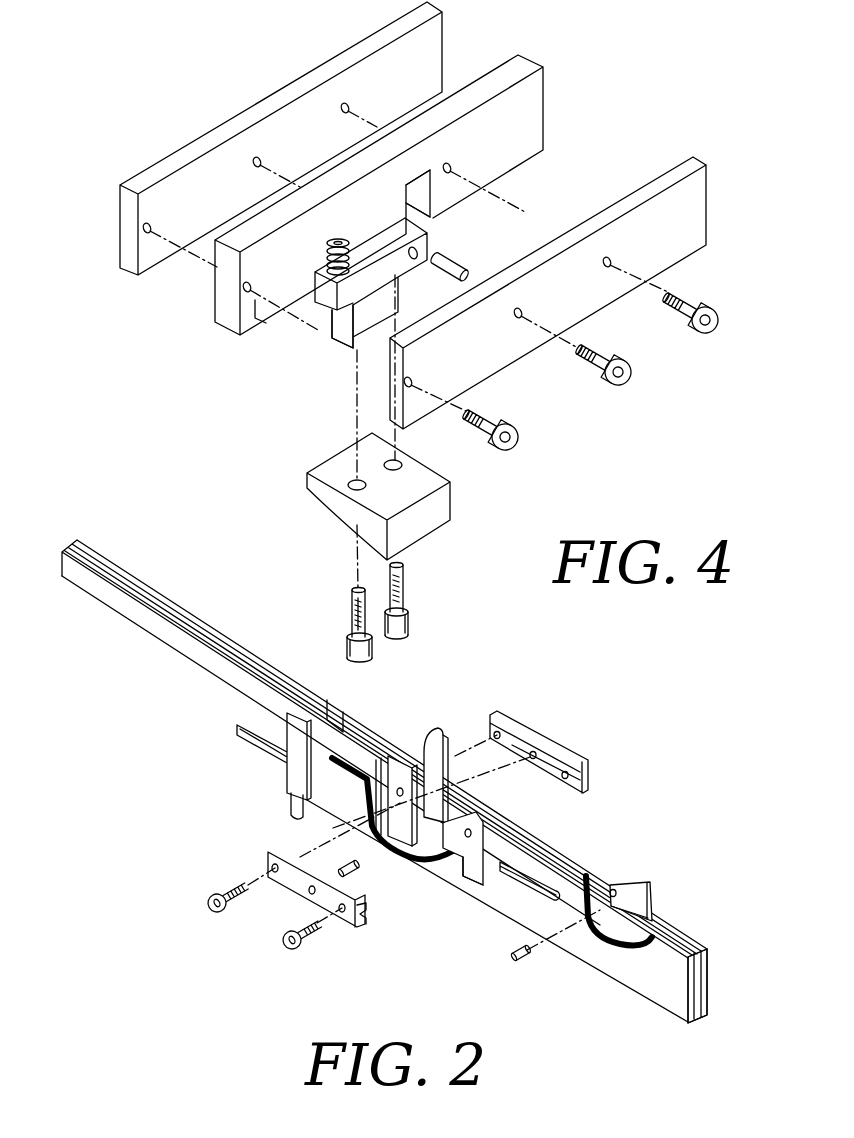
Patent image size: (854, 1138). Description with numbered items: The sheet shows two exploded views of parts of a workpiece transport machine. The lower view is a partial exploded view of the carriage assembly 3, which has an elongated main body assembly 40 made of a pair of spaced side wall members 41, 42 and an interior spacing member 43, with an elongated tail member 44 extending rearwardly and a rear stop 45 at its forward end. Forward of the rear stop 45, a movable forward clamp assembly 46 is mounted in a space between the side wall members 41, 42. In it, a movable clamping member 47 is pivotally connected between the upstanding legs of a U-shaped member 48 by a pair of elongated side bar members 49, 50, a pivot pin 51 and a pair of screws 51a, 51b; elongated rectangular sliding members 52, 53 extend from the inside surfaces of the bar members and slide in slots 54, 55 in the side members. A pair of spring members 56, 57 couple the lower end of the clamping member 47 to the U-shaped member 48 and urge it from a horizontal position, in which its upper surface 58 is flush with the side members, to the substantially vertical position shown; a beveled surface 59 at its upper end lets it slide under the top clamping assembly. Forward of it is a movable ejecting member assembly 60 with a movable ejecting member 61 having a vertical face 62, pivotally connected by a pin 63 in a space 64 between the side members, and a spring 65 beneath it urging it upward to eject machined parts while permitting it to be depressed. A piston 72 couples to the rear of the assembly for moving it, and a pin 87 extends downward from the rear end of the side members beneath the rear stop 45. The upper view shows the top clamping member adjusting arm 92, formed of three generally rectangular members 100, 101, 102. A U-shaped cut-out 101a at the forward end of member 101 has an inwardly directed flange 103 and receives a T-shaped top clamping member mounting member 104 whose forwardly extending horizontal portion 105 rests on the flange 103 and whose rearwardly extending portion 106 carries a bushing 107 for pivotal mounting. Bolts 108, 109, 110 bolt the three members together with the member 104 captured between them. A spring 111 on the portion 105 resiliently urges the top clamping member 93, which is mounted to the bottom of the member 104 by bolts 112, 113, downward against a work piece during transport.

In FIG. 4, the top clamping member adjusting arm 92 is at (183, 137).
In FIG. 4, the rectangular member 100 is at (313, 77).
In FIG. 4, the rectangular member 101 is at (518, 75).
In FIG. 4, the U-shaped cut-out 101a is at (393, 193).
In FIG. 4, the rectangular member 102 is at (698, 225).
In FIG. 4, the inwardly directed flange 103 is at (262, 307).
In FIG. 4, the top clamping member mounting member 104 is at (345, 325).
In FIG. 4, the forwardly extending horizontal portion 105 is at (330, 318).
In FIG. 4, the rearwardly extending portion 106 is at (420, 253).
In FIG. 4, the bushing 107 is at (455, 263).
In FIG. 4, the bolt 108 is at (518, 432).
In FIG. 4, the bolt 109 is at (632, 368).
In FIG. 4, the bolt 110 is at (720, 310).
In FIG. 4, the spring 111 is at (327, 255).
In FIG. 4, the bolt 112 is at (372, 645).
In FIG. 4, the bolt 113 is at (410, 620).
In FIG. 4, the top clamping member 93 is at (442, 507).
In FIG. 2, the carriage assembly 3 is at (468, 683).
In FIG. 2, the main body assembly 40 is at (688, 915).
In FIG. 2, the side wall member 41 is at (665, 993).
In FIG. 2, the side wall member 42 is at (707, 973).
In FIG. 2, the interior spacing member 43 is at (88, 553).
In FIG. 2, the tail member 44 is at (178, 603).
In FIG. 2, the rear stop 45 is at (343, 708).
In FIG. 2, the forward clamp assembly 46 is at (462, 882).
In FIG. 2, the movable clamping member 47 is at (451, 722).
In FIG. 2, the U-shaped member 48 is at (478, 882).
In FIG. 2, the side bar member 49 is at (350, 923).
In FIG. 2, the side bar member 50 is at (588, 775).
In FIG. 2, the pivot pin 51 is at (358, 870).
In FIG. 2, the screw 51a is at (222, 912).
In FIG. 2, the screw 51b is at (300, 950).
In FIG. 2, the sliding member 52 is at (363, 910).
In FIG. 2, the sliding member 53 is at (567, 780).
In FIG. 2, the slot 54 is at (548, 895).
In FIG. 2, the slot 55 is at (378, 760).
In FIG. 2, the spring member 56 is at (367, 833).
In FIG. 2, the spring member 57 is at (470, 870).
In FIG. 2, the upper surface 58 is at (416, 766).
In FIG. 2, the beveled surface 59 is at (425, 748).
In FIG. 2, the movable ejecting member assembly 60 is at (635, 872).
In FIG. 2, the movable ejecting member 61 is at (627, 882).
In FIG. 2, the vertical face 62 is at (660, 885).
In FIG. 2, the pin 63 is at (523, 955).
In FIG. 2, the space 64 is at (637, 920).
In FIG. 2, the spring 65 is at (618, 918).
In FIG. 2, the piston 72 is at (278, 750).
In FIG. 2, the pin 87 is at (288, 807).